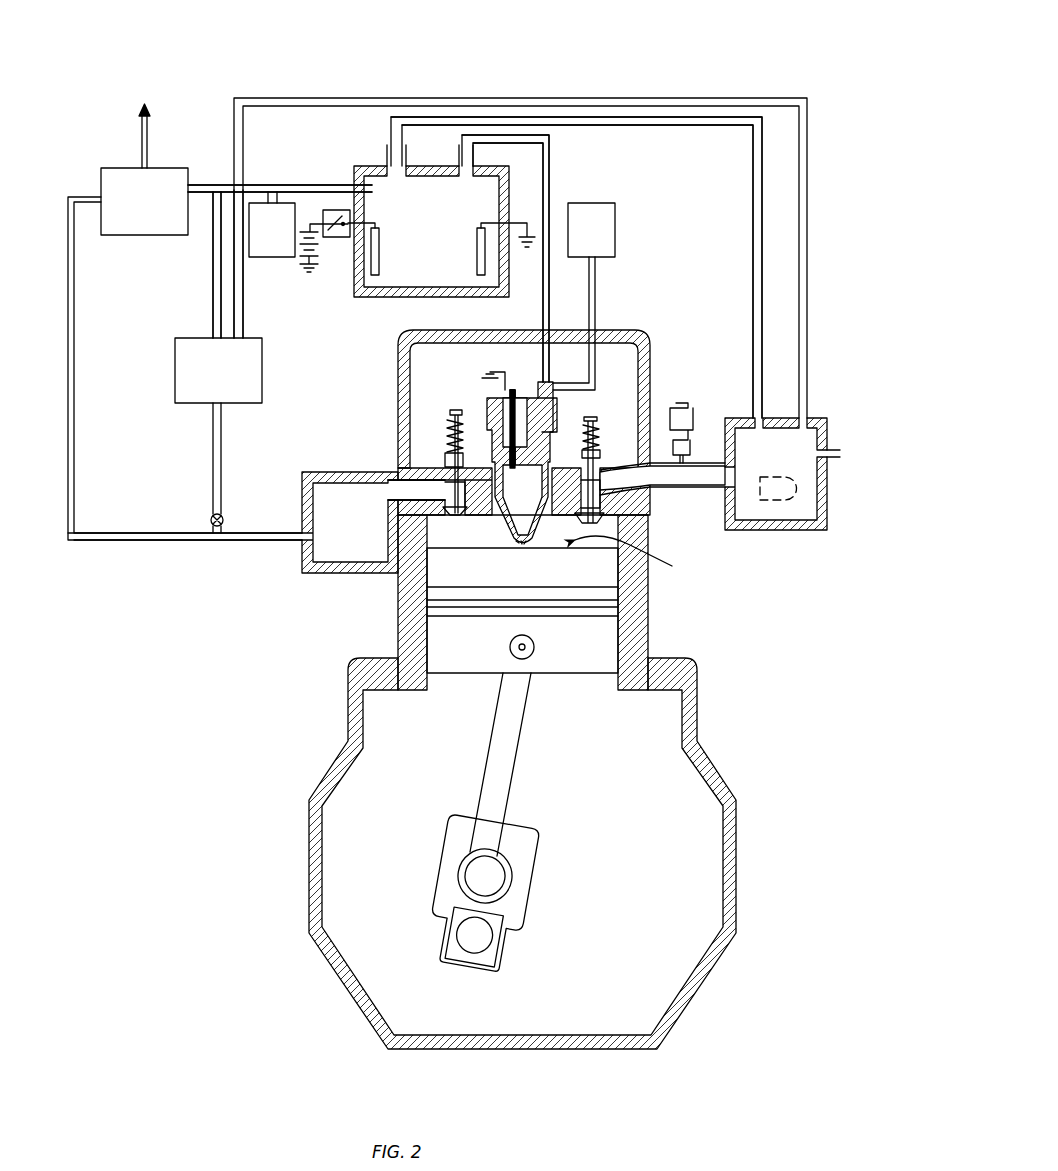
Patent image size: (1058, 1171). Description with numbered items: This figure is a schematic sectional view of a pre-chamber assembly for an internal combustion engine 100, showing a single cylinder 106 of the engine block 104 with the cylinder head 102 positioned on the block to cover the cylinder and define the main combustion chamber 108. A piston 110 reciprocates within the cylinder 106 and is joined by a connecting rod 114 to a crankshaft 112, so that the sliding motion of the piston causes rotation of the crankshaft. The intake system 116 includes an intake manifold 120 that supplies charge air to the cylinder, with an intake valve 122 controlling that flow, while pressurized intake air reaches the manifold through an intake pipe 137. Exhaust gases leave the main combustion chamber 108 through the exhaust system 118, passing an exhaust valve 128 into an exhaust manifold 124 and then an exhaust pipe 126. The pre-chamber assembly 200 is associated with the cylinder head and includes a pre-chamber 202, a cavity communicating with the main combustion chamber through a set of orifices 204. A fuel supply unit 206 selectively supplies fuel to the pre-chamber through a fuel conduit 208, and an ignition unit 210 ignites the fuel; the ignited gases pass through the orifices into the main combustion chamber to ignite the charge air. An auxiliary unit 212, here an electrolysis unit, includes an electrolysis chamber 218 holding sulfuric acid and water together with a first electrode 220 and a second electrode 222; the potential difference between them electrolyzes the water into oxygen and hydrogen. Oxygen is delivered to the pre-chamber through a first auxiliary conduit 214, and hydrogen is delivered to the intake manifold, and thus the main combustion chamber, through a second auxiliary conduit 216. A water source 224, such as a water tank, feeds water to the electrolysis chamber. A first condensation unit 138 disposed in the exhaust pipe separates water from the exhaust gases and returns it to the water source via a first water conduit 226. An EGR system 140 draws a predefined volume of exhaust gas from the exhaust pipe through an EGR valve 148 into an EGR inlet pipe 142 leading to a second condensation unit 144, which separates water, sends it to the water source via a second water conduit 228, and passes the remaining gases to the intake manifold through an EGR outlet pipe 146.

The internal combustion engine 100 is at (733, 55).
The cylinder head 102 is at (651, 358).
The engine block 104 is at (730, 858).
The cylinder 106 is at (417, 627).
The main combustion chamber 108 is at (628, 584).
The piston 110 is at (597, 627).
The crankshaft 112 is at (457, 834).
The connecting rod 114 is at (520, 748).
The intake system 116 is at (708, 442).
The exhaust system 118 is at (357, 443).
The intake manifold 120 is at (800, 531).
The intake valve 122 is at (641, 555).
The exhaust manifold 124 is at (302, 500).
The exhaust pipe 126 is at (228, 541).
The exhaust valve 128 is at (447, 497).
The intake pipe 137 is at (832, 449).
The first condensation unit 138 is at (144, 169).
The Exhaust Gas Recirculation (EGR) system 140 is at (162, 356).
The EGR inlet pipe 142 is at (373, 97).
The second condensation unit 144 is at (218, 370).
The EGR outlet pipe 146 is at (243, 307).
The EGR valve 148 is at (211, 517).
The pre-chamber assembly 200 is at (653, 207).
The pre-chamber 202 is at (522, 463).
The set of orifices 204 is at (505, 549).
The fuel supply unit 206 is at (591, 230).
The fuel conduit 208 is at (598, 273).
The ignition unit 210 is at (507, 406).
The auxiliary unit 212 is at (362, 157).
The first auxiliary conduit 214 is at (550, 163).
The second auxiliary conduit 216 is at (753, 240).
The electrolysis chamber 218 is at (431, 221).
The first electrode 220 is at (386, 272).
The second electrode 222 is at (468, 262).
The water source 224 is at (299, 232).
The first water conduit 226 is at (225, 184).
The second water conduit 228 is at (213, 279).